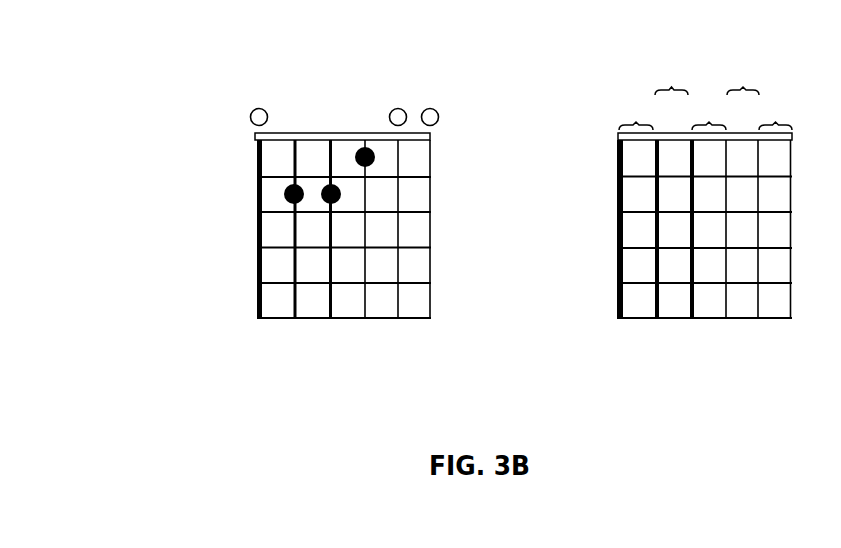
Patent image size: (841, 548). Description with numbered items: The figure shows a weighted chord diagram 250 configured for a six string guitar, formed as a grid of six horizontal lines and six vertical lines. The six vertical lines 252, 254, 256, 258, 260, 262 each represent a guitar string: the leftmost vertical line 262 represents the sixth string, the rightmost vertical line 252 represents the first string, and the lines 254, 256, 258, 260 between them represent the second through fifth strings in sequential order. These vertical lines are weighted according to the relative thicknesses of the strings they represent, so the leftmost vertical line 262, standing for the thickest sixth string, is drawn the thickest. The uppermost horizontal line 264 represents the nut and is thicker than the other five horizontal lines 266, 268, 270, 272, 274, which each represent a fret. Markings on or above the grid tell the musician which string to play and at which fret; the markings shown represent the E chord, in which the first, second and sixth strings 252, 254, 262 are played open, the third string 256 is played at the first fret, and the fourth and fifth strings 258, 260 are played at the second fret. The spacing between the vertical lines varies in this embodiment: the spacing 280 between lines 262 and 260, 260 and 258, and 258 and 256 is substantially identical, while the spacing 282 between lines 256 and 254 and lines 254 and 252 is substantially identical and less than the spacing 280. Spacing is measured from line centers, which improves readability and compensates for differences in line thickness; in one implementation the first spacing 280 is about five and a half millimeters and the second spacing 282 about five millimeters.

The weighted chord diagram 250 is at (258, 70).
The rightmost vertical line 252 is at (430, 319).
The vertical line 254 is at (399, 319).
The vertical line 256 is at (364, 319).
The vertical line 258 is at (330, 319).
The vertical line 260 is at (295, 319).
The leftmost vertical line 262 is at (260, 319).
The uppermost horizontal line 264 is at (256, 135).
The horizontal line 266 is at (256, 175).
The horizontal line 268 is at (256, 211).
The horizontal line 270 is at (256, 247).
The horizontal line 272 is at (256, 282).
The horizontal line 274 is at (256, 317).
The first spacing 280 is at (675, 96).
The second spacing 282 is at (761, 96).